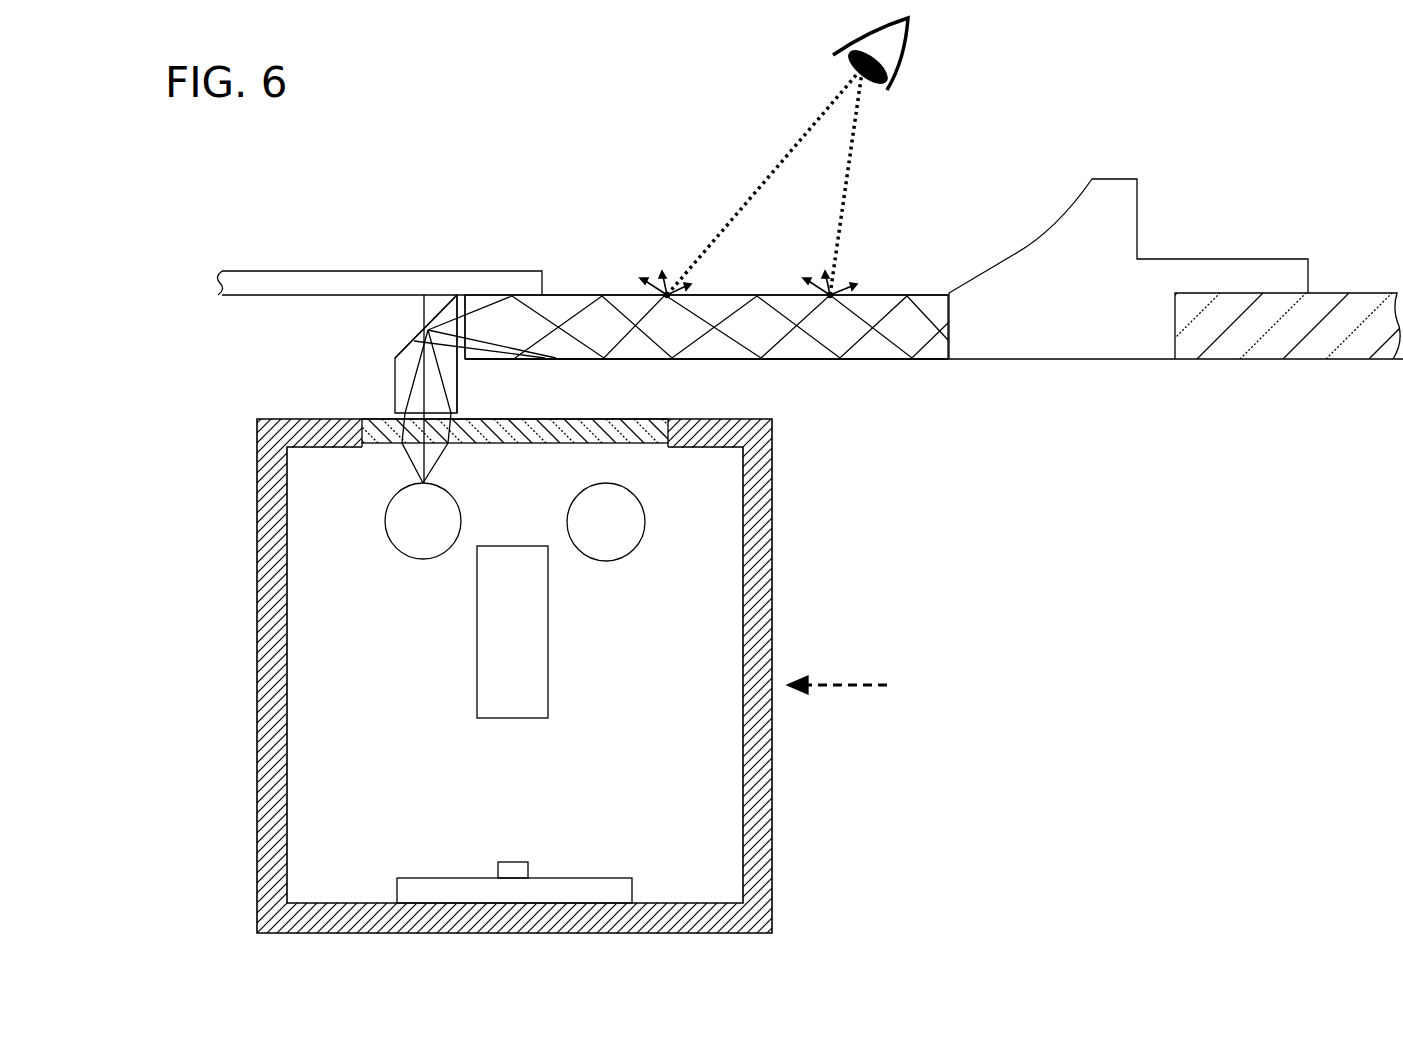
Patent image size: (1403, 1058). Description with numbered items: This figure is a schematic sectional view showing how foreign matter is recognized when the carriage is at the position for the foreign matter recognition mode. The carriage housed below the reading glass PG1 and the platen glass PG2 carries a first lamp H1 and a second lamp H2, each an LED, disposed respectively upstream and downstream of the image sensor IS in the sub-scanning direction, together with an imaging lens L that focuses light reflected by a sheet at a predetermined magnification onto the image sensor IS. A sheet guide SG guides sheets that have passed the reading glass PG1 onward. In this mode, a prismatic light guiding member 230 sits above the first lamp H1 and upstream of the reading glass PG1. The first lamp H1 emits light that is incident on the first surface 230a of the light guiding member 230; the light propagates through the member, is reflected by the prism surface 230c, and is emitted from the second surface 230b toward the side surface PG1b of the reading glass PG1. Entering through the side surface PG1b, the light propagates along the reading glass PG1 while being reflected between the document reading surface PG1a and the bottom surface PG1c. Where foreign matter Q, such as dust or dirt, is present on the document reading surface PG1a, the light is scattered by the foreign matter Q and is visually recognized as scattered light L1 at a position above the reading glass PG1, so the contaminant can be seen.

The light guiding member 230 is at (408, 383).
The first surface 230a is at (410, 443).
The second surface 230b is at (462, 332).
The prism surface 230c is at (427, 330).
The reading glass PG1 is at (572, 303).
The document reading surface PG1a is at (633, 295).
The side surface PG1b is at (453, 300).
The bottom surface PG1c is at (777, 360).
The platen glass PG2 is at (1322, 312).
The sheet guide SG is at (1118, 200).
The foreign matter Q is at (827, 287).
The scattered light L1 is at (787, 156).
The first lamp H1 is at (417, 535).
The second lamp H2 is at (610, 532).
The imaging lens L is at (503, 622).
The image sensor IS is at (518, 870).